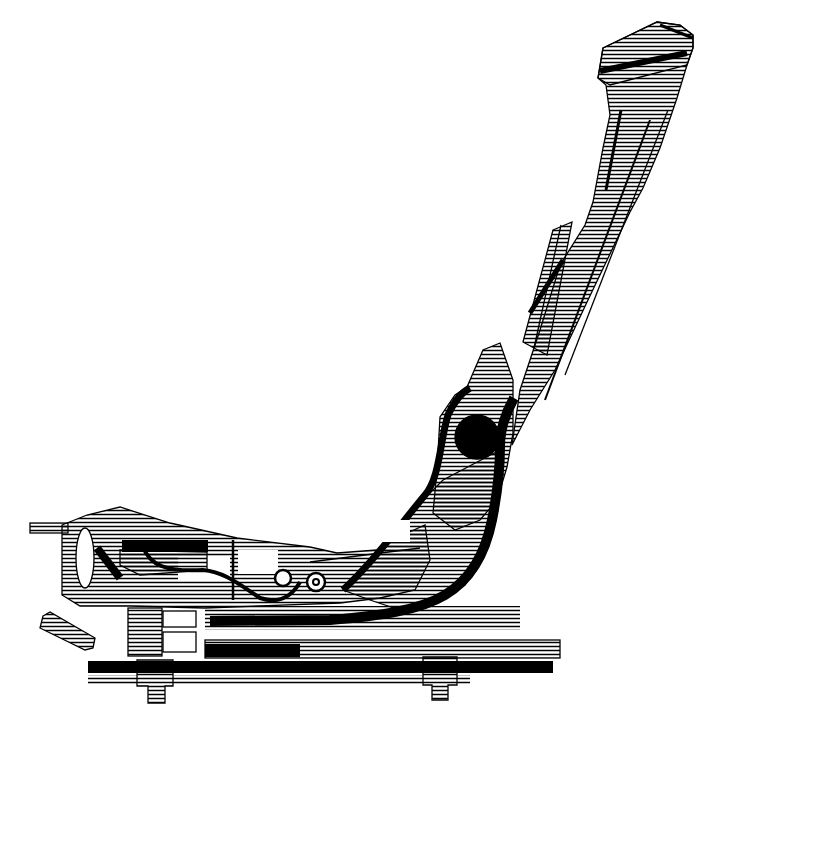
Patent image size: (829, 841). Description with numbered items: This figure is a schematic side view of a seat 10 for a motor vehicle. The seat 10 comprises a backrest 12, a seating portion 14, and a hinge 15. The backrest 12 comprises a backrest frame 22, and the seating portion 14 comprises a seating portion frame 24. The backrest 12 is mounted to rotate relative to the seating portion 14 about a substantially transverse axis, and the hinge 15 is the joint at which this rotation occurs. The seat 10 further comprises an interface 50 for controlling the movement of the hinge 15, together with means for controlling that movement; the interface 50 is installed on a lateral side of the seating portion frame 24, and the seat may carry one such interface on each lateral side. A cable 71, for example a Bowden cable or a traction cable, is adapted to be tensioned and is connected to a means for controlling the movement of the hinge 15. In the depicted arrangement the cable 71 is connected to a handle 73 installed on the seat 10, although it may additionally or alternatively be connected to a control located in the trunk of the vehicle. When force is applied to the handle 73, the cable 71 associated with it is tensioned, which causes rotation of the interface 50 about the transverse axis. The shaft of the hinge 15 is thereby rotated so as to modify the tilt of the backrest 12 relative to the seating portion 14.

The seat 10 is at (248, 178).
The backrest 12 is at (630, 208).
The seating portion 14 is at (98, 547).
The hinge 15 is at (505, 433).
The backrest frame 22 is at (565, 362).
The seating portion frame 24 is at (340, 565).
The interface 50 is at (463, 390).
The cable 71 is at (400, 523).
The handle 73 is at (170, 547).